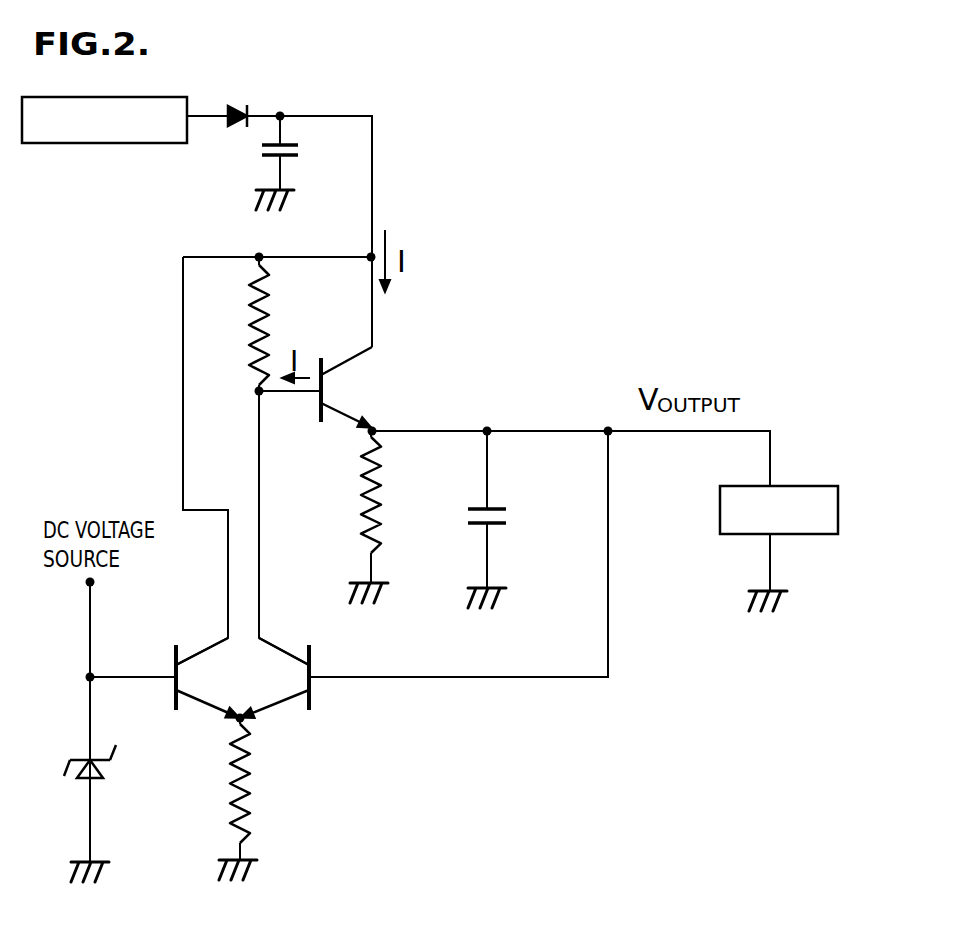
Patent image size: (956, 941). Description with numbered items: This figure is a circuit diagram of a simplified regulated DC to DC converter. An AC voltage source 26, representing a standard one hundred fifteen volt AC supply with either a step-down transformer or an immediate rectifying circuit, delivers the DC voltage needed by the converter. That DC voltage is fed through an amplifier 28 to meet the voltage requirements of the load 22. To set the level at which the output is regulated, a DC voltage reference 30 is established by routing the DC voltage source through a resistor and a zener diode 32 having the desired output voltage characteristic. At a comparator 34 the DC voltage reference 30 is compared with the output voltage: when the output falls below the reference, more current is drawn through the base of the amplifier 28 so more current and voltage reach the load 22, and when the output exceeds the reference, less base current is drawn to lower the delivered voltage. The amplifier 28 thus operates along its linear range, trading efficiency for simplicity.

The AC voltage source 26 is at (178, 134).
The load 22 is at (830, 524).
The amplifier 28 is at (330, 391).
The DC voltage reference 30 is at (192, 678).
The comparator 34 is at (274, 678).
The zener diode 32 is at (101, 767).